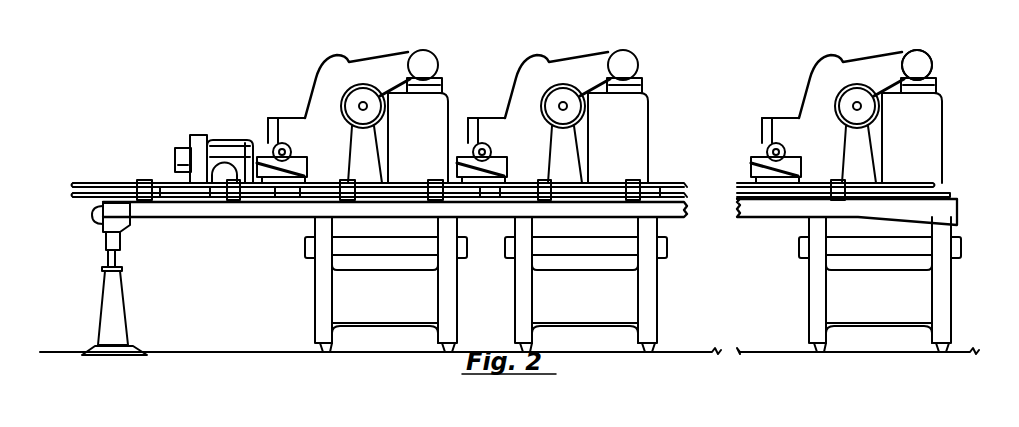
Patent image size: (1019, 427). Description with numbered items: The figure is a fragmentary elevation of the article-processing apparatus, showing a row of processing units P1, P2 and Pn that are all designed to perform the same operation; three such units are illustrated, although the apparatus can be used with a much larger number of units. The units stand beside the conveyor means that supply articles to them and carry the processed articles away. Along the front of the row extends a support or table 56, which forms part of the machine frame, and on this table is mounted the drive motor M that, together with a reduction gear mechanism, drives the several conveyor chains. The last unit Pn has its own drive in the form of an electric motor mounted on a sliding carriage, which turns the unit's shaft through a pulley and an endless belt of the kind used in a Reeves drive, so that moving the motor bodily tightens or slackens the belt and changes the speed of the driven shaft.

The processing unit P1 is at (386, 46).
The processing unit P2 is at (586, 45).
The processing unit Pn is at (890, 45).
The drive motor M is at (214, 138).
The support or table 56 is at (681, 214).